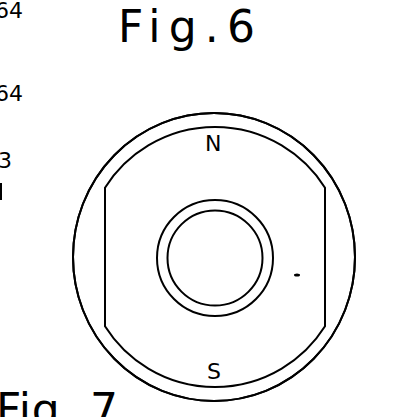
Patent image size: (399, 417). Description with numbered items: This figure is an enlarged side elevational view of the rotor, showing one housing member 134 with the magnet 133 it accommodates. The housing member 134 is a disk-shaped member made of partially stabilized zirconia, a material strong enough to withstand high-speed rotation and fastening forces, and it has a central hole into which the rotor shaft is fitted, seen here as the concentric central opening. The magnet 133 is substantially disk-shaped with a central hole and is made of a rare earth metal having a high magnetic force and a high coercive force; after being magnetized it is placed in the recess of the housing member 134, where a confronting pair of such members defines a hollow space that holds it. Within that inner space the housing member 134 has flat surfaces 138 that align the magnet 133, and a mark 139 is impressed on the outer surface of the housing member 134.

The magnet 133 is at (283, 160).
The housing member 134 is at (236, 119).
The flat surface 138 is at (105, 277).
The mark 139 is at (72, 254).